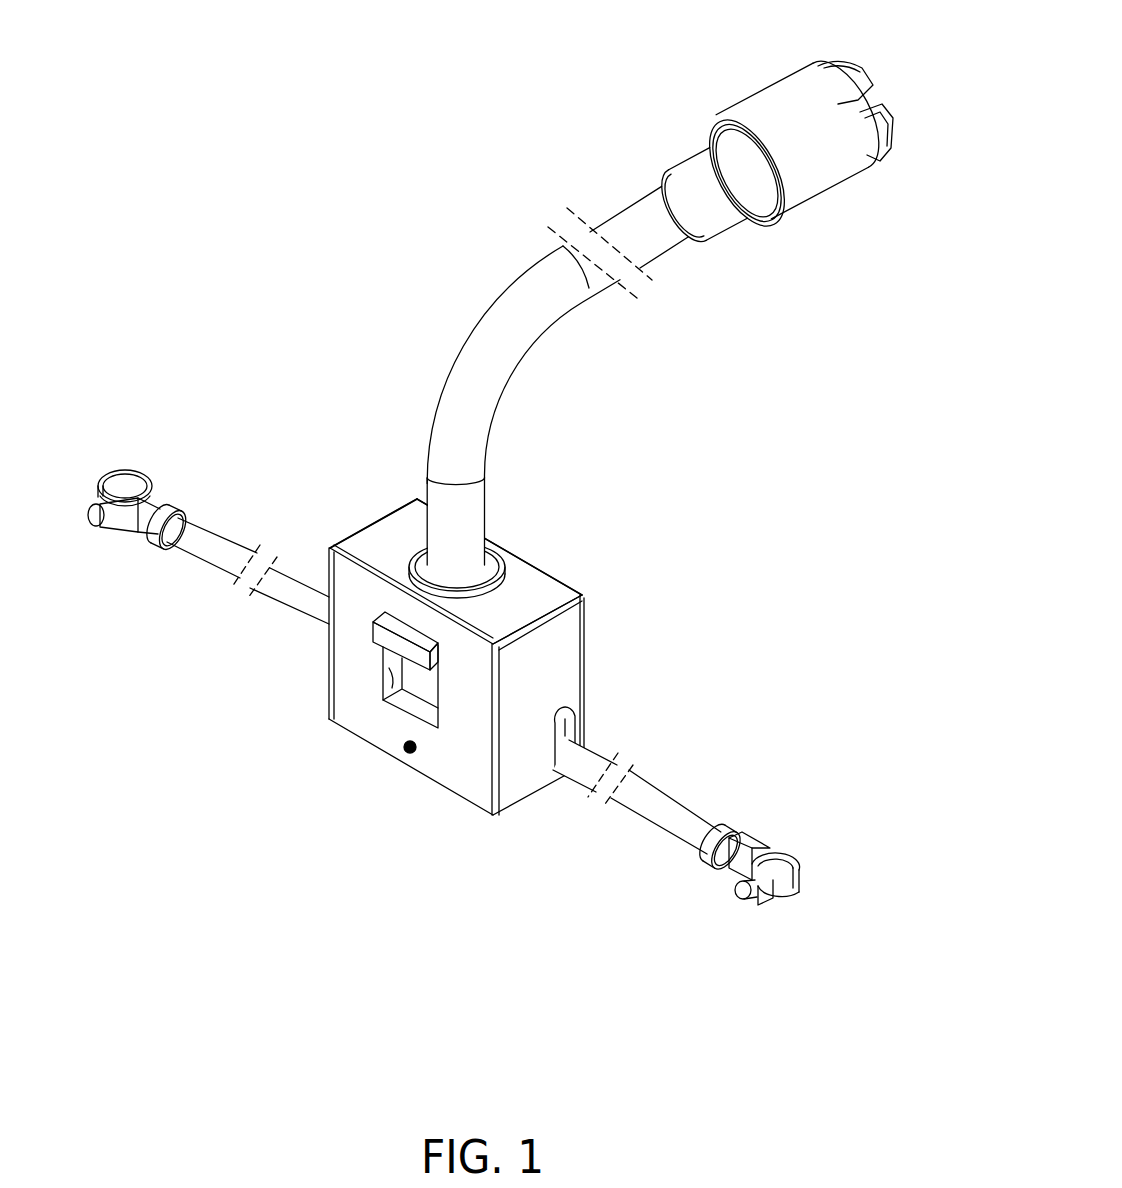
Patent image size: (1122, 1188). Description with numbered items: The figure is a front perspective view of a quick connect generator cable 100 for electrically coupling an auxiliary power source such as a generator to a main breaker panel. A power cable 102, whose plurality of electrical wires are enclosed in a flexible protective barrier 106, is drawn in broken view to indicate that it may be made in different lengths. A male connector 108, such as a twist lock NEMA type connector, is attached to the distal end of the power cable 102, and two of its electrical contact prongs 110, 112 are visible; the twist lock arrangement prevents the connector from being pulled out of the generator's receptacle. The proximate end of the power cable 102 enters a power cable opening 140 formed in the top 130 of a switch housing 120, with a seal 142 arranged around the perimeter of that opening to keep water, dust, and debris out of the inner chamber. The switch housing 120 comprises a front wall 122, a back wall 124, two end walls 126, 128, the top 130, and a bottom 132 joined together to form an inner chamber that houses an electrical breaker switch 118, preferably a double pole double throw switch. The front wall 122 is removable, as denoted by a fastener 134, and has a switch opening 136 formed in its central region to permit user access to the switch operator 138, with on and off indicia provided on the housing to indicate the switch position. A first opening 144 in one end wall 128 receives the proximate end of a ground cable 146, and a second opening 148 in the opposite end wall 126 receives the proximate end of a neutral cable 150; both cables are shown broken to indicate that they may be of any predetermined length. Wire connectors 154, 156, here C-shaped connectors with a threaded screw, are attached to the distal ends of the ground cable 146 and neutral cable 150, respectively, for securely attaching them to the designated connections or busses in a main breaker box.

The quick connect generator cable 100 is at (500, 458).
The power cable 102 is at (645, 293).
The flexible protective barrier 106 is at (492, 391).
The male connector 108 is at (753, 100).
The electrical contact prong 110 is at (867, 78).
The electrical contact prong 112 is at (892, 143).
The electrical breaker switch 118 is at (354, 692).
The switch housing 120 is at (443, 651).
The front wall 122 is at (468, 778).
The back wall 124 is at (586, 672).
The end wall 126 is at (372, 523).
The end wall 128 is at (528, 780).
The top 130 is at (449, 540).
The bottom 132 is at (500, 815).
The fastener 134 is at (408, 752).
The switch opening 136 is at (420, 694).
The switch operator 138 is at (397, 641).
The power cable opening 140 is at (492, 548).
The seal 142 is at (417, 540).
The first opening 144 is at (573, 730).
The ground cable 146 is at (716, 822).
The second opening 148 is at (185, 527).
The neutral cable 150 is at (207, 540).
The wire connector 154 is at (800, 865).
The wire connector 156 is at (120, 487).